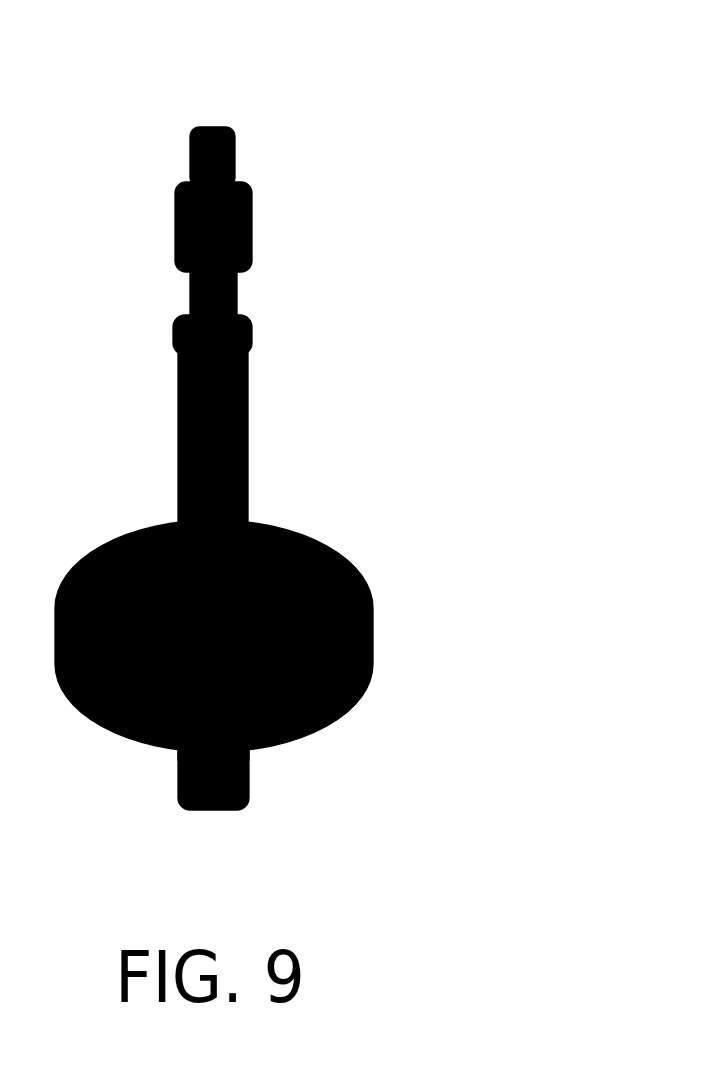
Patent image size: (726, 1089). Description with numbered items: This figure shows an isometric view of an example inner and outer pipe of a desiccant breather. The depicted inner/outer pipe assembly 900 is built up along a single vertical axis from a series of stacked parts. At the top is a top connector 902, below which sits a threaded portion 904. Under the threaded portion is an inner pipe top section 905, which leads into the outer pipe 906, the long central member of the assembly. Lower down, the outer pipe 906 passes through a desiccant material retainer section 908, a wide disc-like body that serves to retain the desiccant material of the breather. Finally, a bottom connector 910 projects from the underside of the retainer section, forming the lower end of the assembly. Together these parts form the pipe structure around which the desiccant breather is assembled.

The inner/outer pipe assembly 900 is at (128, 78).
The top connector 902 is at (245, 140).
The threaded portion 904 is at (255, 233).
The inner pipe top section 905 is at (247, 300).
The outer pipe 906 is at (250, 422).
The desiccant material retainer section 908 is at (377, 618).
The bottom connector 910 is at (245, 803).